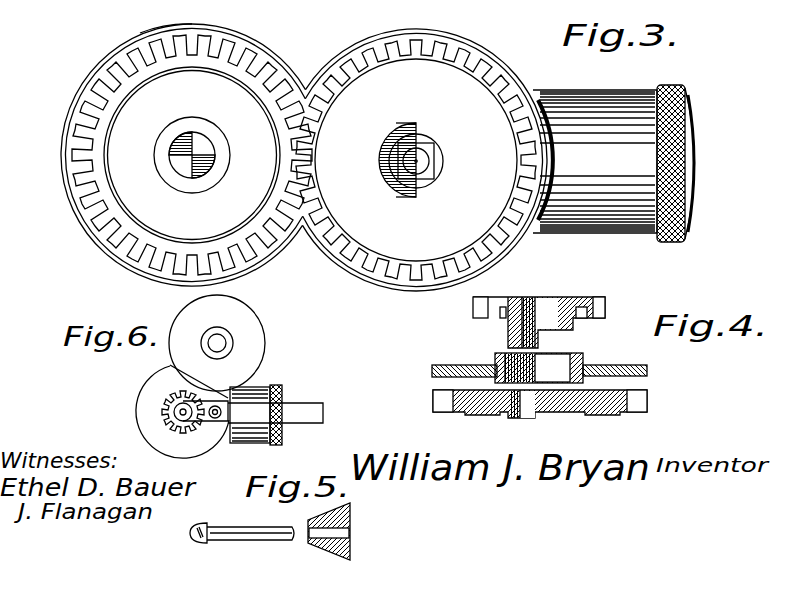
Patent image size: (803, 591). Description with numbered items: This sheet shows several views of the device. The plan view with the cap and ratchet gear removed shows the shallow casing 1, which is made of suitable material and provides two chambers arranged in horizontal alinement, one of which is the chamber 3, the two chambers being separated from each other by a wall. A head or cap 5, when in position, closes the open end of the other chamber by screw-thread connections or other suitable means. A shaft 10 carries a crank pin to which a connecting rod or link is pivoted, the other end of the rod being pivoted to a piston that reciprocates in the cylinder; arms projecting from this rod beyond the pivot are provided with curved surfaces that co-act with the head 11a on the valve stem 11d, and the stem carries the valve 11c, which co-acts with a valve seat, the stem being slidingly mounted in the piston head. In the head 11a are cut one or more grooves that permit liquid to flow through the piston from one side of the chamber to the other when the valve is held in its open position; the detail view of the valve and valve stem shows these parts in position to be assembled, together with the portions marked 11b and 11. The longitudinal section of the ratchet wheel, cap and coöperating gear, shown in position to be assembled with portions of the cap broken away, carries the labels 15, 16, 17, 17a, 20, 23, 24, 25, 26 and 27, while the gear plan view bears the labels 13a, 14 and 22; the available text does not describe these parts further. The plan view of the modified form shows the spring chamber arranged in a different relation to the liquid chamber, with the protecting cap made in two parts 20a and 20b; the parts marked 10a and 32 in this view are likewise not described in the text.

In FIG. 3, the casing 1 is at (328, 56).
In FIG. 3, the chamber 3 is at (90, 215).
In FIG. 3, the head or cap 5 is at (690, 118).
In FIG. 6, the head or cap 5 is at (283, 386).
In FIG. 3, the shaft 10 is at (437, 172).
In FIG. 6, the shaft 10 is at (180, 415).
In FIG. 3, the hub 10a is at (190, 165).
In FIG. 6, the hub 10a is at (220, 343).
In FIG. 3, the pin 11 is at (166, 16).
In FIG. 5, the head on the valve stem 11a is at (191, 545).
In FIG. 5, the pin shank 11b is at (240, 541).
In FIG. 5, the valve 11c is at (352, 550).
In FIG. 5, the valve stem 11d is at (197, 526).
In FIG. 3, the gear rim 13a is at (214, 48).
In FIG. 3, the square nut 14 is at (437, 157).
In FIG. 3, the driven gear 15 is at (500, 72).
In FIG. 4, the driven gear 15 is at (648, 405).
In FIG. 3, the cam 16 is at (398, 129).
In FIG. 4, the cam 16 is at (512, 416).
In FIG. 3, the cam hub 17 is at (419, 131).
In FIG. 4, the cam hub 17 is at (530, 405).
In FIG. 3, the cam shoulder 17a is at (417, 198).
In FIG. 4, the shaft 20 is at (455, 365).
In FIG. 6, the cap part 20a is at (255, 338).
In FIG. 6, the cap part 20b is at (207, 430).
In FIG. 3, the casing wall 22 is at (70, 200).
In FIG. 4, the collar 23 is at (505, 386).
In FIG. 4, the shaft end 24 is at (600, 366).
In FIG. 4, the flanged hub 25 is at (512, 298).
In FIG. 6, the flanged hub 25 is at (172, 403).
In FIG. 4, the recess 26 is at (500, 318).
In FIG. 4, the hub 27 is at (500, 355).
In FIG. 6, the arm 32 is at (212, 430).